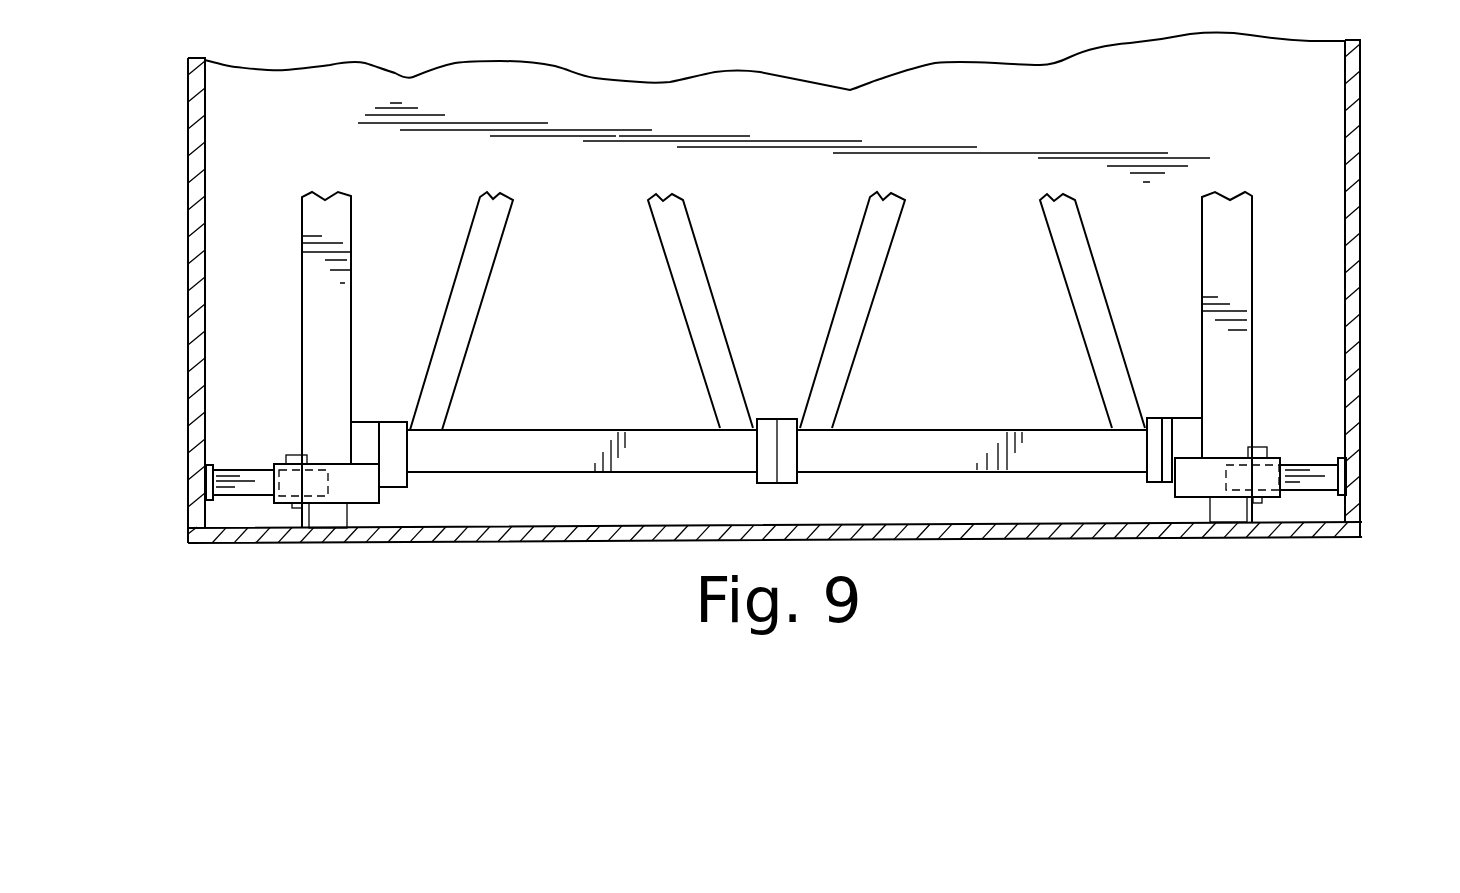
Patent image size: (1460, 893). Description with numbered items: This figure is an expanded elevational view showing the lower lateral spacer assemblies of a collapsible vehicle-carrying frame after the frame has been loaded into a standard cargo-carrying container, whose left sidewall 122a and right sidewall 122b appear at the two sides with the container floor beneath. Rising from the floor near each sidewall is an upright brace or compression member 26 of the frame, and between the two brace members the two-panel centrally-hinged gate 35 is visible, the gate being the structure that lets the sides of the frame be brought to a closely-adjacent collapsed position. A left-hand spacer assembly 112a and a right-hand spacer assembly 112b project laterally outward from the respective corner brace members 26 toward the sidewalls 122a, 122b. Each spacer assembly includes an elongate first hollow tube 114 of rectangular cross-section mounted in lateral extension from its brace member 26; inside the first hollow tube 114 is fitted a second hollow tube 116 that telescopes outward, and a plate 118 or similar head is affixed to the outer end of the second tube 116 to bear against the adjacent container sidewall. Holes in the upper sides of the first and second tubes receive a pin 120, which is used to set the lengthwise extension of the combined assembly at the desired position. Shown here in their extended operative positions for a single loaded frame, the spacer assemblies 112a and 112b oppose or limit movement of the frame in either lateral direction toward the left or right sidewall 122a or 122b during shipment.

The upright brace member 26 is at (301, 290).
The two-panel centrally-hinged gate 35 is at (1057, 428).
The left-hand lower lateral spacer assembly 112a is at (288, 510).
The right-hand lower lateral spacer assembly 112b is at (1257, 508).
The first hollow tube 114 is at (381, 488).
The second hollow tube 116 is at (230, 497).
The plate 118 is at (212, 463).
The pin 120 is at (294, 453).
The left sidewall 122a is at (204, 172).
The right sidewall 122b is at (1345, 152).